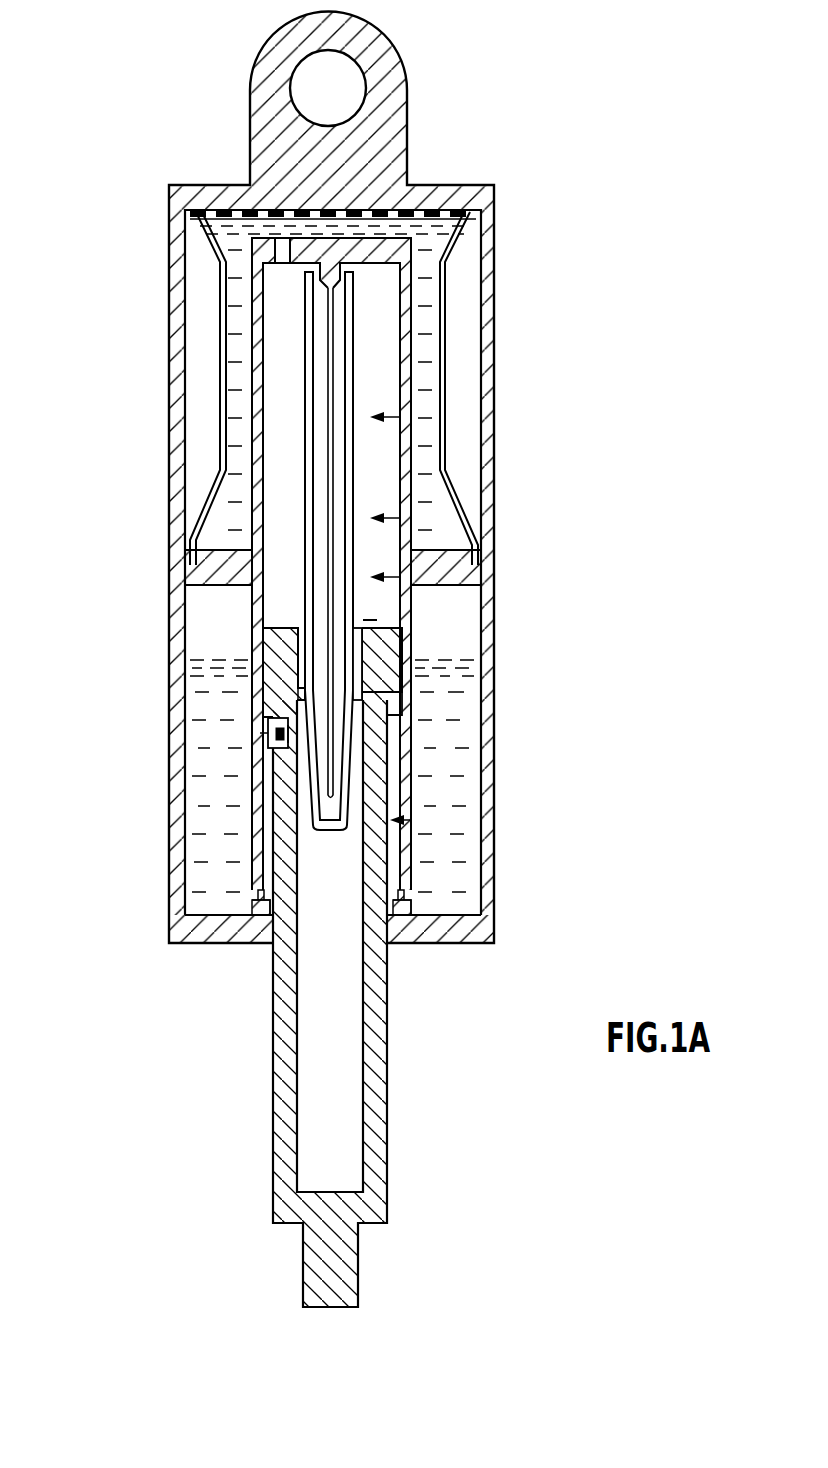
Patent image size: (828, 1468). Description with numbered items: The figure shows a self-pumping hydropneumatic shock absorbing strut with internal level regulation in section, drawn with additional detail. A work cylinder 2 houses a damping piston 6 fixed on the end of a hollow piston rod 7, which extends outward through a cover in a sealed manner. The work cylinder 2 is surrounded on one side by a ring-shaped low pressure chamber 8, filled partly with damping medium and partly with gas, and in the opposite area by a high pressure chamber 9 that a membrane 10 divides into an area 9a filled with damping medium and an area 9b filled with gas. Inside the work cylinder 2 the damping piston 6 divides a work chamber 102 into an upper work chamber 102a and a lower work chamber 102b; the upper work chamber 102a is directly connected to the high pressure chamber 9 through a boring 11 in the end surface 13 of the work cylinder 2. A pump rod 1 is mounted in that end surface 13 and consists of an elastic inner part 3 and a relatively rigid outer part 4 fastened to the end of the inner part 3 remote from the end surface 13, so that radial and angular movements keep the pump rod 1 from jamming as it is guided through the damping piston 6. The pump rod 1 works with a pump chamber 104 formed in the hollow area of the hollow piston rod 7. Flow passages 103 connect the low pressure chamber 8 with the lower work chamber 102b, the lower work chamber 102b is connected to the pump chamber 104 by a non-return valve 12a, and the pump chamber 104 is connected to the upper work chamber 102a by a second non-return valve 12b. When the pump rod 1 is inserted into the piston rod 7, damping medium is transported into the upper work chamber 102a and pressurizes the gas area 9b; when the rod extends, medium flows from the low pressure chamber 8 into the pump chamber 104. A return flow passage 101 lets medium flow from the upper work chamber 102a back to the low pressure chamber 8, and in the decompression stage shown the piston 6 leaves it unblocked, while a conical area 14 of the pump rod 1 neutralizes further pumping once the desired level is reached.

The pump rod 1 is at (400, 518).
The work cylinder 2 is at (403, 439).
The inner part 3 is at (327, 591).
The outer part 4 is at (305, 378).
The damping piston 6 is at (420, 683).
The hollow piston rod 7 is at (377, 1128).
The low pressure chamber 8 is at (453, 853).
The high pressure chamber 9 is at (177, 438).
The area filled with damping medium 9a is at (427, 338).
The area filled with gas 9b is at (462, 379).
The membrane 10 is at (217, 310).
The boring 11 is at (282, 246).
The non-return valve 12a is at (270, 750).
The second non-return valve 12b is at (410, 607).
The end surface 13 is at (407, 280).
The conical area 14 is at (300, 695).
The return flow passage 101 is at (262, 625).
The work chamber 102 is at (400, 417).
The upper work chamber 102a is at (400, 577).
The lower work chamber 102b is at (410, 820).
The flow passages 103 is at (248, 900).
The pump chamber 104 is at (323, 1038).